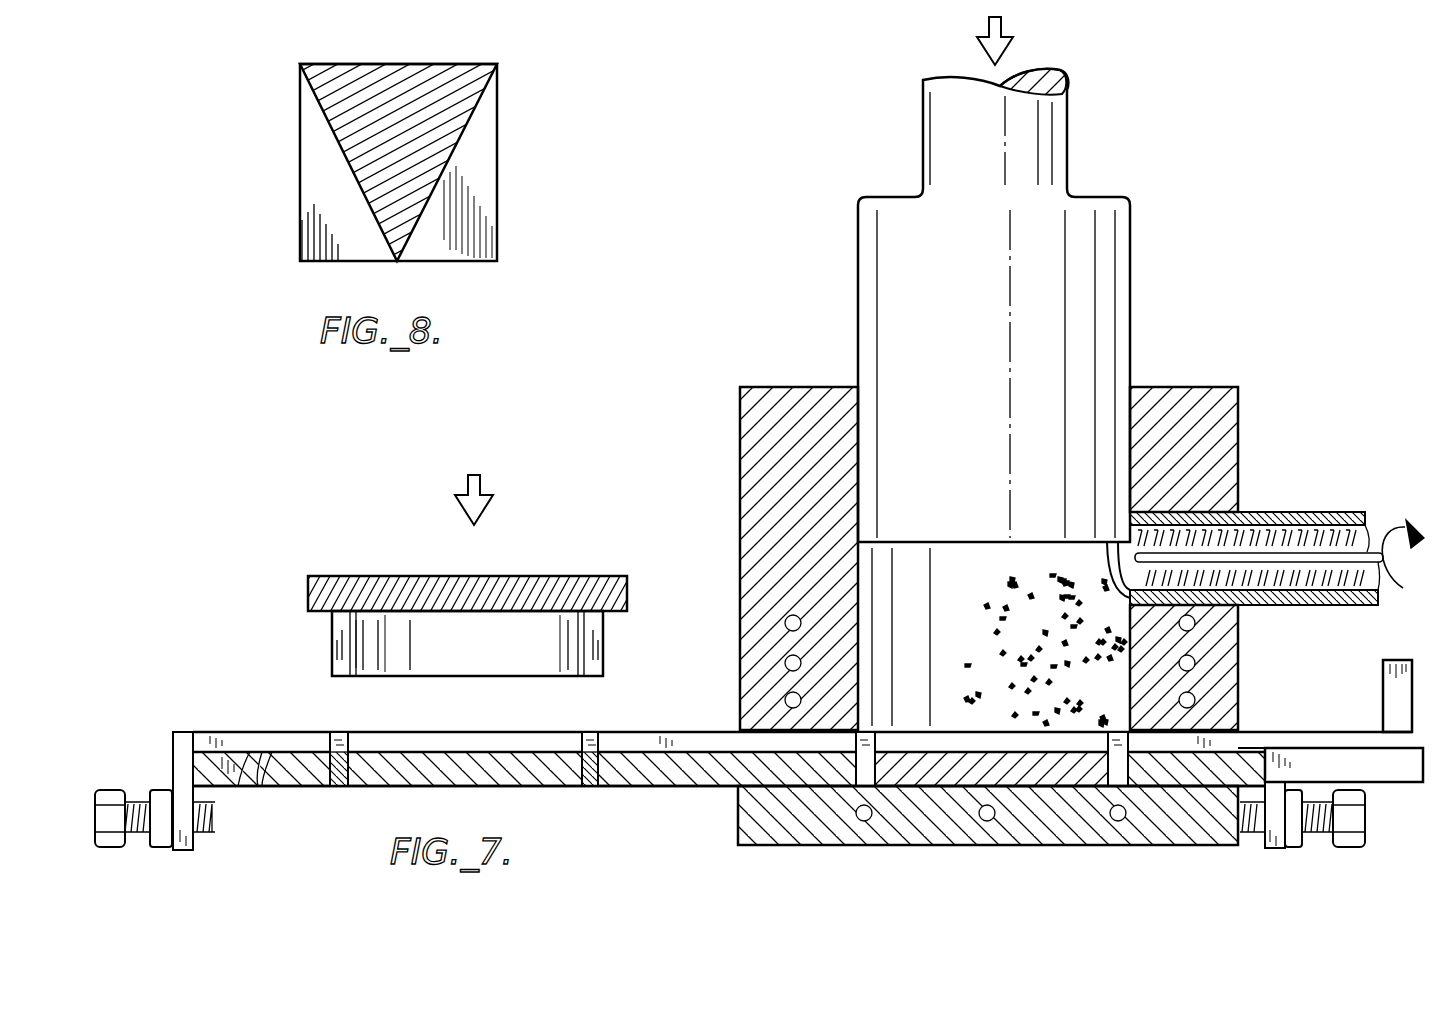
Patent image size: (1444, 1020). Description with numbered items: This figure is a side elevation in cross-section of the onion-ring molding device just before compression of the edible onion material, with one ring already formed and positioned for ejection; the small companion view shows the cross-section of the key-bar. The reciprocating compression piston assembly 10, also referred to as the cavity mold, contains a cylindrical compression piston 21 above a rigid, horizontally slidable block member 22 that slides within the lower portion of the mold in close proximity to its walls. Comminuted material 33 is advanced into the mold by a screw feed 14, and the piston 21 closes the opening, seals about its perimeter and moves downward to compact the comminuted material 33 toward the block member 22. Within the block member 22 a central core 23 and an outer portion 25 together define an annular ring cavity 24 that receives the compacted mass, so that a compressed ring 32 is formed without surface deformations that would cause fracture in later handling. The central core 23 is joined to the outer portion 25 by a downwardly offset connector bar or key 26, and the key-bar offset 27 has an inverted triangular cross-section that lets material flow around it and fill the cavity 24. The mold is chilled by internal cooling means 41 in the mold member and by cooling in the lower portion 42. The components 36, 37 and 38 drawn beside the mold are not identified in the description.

In FIG. 7, the reciprocating compression piston assembly 10 is at (1240, 428).
In FIG. 7, the screw feed 14 is at (1310, 522).
In FIG. 7, the compression piston 21 is at (1100, 295).
In FIG. 7, the slidable block member 22 is at (703, 786).
In FIG. 7, the central core 23 is at (437, 752).
In FIG. 7, the annular ring cavity 24 is at (1232, 762).
In FIG. 7, the outer portion 25 is at (270, 784).
In FIG. 8, the connector bar or key 26 is at (499, 172).
In FIG. 7, the connector bar or key 26 is at (652, 732).
In FIG. 8, the key-bar offset 27 is at (452, 100).
In FIG. 7, the key-bar offset 27 is at (587, 734).
In FIG. 7, the compressed ring 32 is at (590, 790).
In FIG. 7, the comminuted material 33 is at (1017, 602).
In FIG. 7, the die cap 36 is at (578, 576).
In FIG. 7, the die body 37 is at (604, 630).
In FIG. 7, the die cavity 38 is at (398, 655).
In FIG. 7, the internal cooling means 41 is at (1196, 700).
In FIG. 7, the lower portion 42 is at (985, 828).